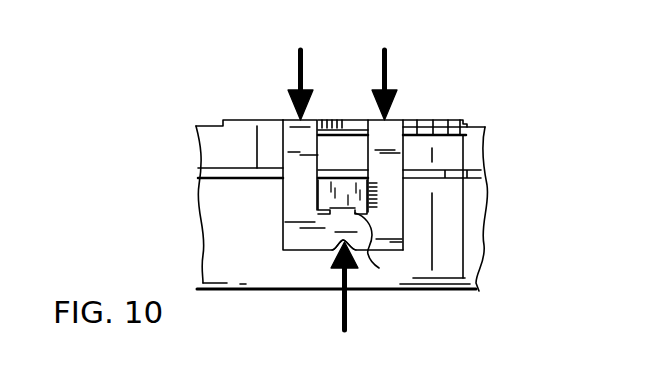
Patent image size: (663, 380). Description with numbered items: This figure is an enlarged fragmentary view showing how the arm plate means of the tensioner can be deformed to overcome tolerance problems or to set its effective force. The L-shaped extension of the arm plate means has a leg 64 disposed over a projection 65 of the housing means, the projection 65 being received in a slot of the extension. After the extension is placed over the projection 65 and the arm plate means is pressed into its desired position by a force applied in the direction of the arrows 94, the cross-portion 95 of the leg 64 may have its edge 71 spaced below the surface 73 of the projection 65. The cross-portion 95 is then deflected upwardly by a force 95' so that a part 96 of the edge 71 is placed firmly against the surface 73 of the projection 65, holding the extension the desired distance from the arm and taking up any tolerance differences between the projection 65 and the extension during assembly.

The arrows 94 is at (297, 65).
The part of the extension 64 is at (395, 195).
The projection means 65 is at (323, 195).
The edge 71 is at (318, 205).
The surface 73 is at (381, 248).
The cross-portion 95 is at (311, 191).
The part of the edge 96 is at (343, 212).
The force 95' is at (378, 286).